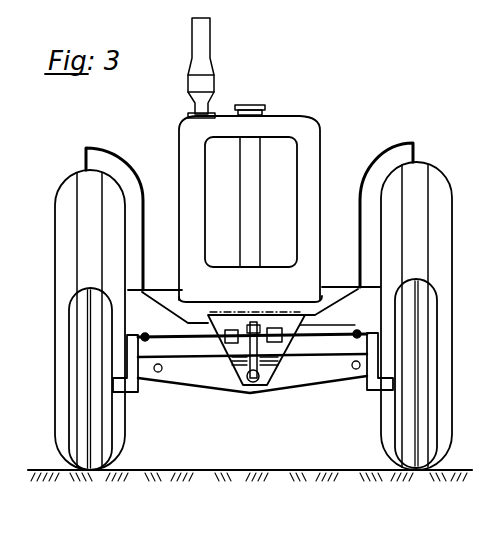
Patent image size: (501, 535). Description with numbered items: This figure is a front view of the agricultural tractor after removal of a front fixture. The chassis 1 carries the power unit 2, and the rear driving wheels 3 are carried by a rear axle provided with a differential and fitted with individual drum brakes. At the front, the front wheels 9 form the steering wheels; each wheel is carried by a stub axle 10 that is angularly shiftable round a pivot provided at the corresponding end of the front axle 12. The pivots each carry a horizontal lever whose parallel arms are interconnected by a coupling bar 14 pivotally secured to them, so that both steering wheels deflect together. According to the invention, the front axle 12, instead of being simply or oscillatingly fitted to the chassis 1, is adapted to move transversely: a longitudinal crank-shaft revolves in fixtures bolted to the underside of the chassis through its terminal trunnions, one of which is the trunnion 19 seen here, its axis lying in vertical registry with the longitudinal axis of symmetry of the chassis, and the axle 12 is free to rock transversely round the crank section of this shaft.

The chassis 1 is at (313, 318).
The power unit 2 is at (280, 146).
The driving wheels 3 is at (84, 219).
The front wheels 9 is at (90, 352).
The stub axle 10 is at (118, 390).
The front axle 12 is at (197, 373).
The coupling bar 14 is at (163, 335).
The terminal trunnion 19 is at (251, 393).